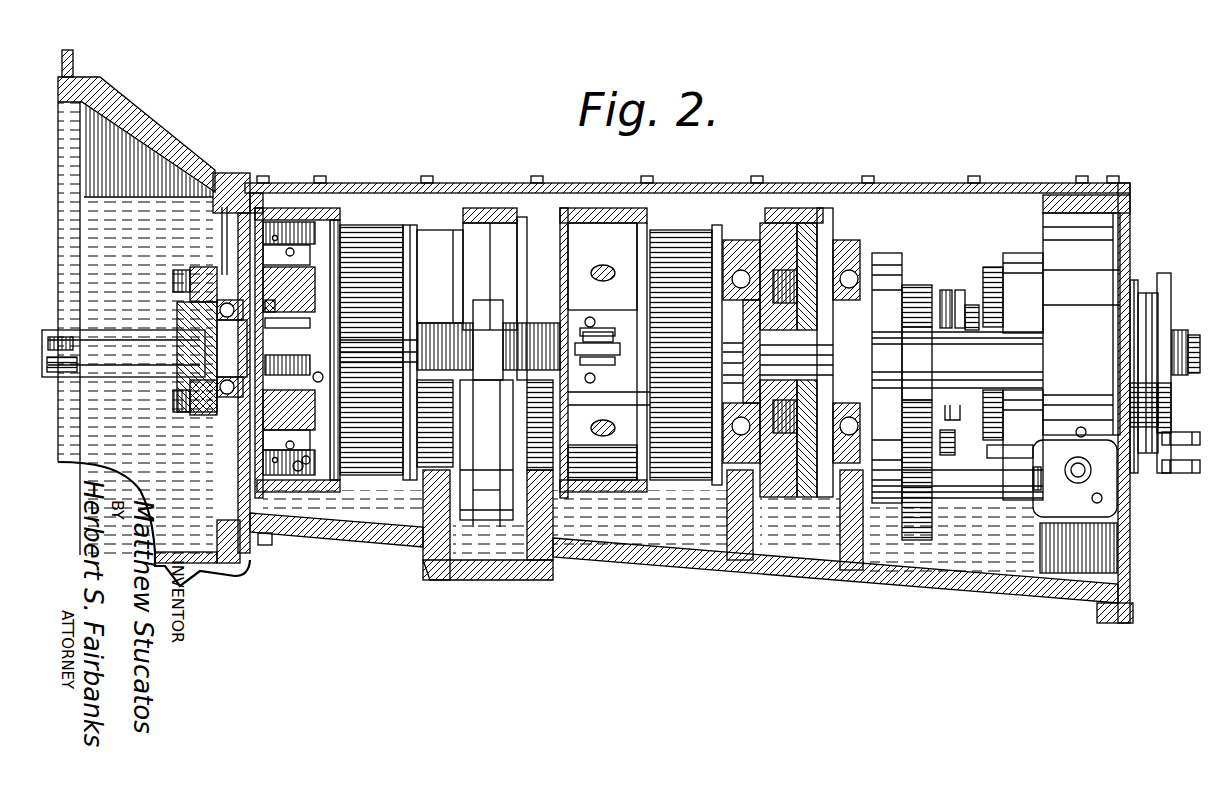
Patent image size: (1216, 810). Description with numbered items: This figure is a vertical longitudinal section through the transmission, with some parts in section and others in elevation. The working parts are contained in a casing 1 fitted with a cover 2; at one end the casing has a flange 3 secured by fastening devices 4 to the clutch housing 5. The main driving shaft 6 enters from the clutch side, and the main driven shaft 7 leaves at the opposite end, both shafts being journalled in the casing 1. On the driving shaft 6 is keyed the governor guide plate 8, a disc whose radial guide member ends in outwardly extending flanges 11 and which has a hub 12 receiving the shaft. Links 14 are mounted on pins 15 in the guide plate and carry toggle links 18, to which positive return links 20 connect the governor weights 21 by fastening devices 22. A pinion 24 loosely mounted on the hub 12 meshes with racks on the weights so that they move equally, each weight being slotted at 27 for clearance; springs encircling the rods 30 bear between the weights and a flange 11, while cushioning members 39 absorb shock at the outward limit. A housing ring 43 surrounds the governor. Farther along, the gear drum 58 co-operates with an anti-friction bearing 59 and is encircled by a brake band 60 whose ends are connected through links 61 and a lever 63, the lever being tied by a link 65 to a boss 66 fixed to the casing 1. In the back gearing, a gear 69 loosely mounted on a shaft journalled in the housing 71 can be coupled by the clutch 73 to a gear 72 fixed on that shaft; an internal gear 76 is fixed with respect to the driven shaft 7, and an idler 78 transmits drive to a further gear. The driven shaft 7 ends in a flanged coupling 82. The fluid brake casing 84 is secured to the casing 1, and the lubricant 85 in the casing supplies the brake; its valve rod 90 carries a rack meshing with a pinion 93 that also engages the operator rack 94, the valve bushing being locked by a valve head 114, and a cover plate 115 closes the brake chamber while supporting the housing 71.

The casing 1 is at (665, 560).
The cover 2 is at (655, 193).
The flange 3 is at (247, 558).
The fastening devices 4 is at (272, 538).
The clutch housing 5 is at (236, 566).
The main driving shaft 6 is at (144, 341).
The main driven shaft 7 is at (1186, 340).
The guide plate 8 is at (332, 438).
The flanges 11 is at (300, 240).
The hub 12 is at (290, 328).
The links 14 is at (625, 352).
The pins 15 is at (294, 360).
The toggle links 18 is at (302, 232).
The positive return links 20 is at (305, 252).
The governor weights 21 is at (300, 284).
The fastening devices 22 is at (305, 262).
The pinion 24 is at (300, 306).
The slot 27 is at (602, 266).
The rods 30 is at (600, 322).
The cushioning members 39 is at (615, 274).
The housing ring 43 is at (300, 215).
The gear drum 58 is at (470, 228).
The anti-friction bearing 59 is at (740, 240).
The brake band 60 is at (510, 208).
The links 61 is at (437, 530).
The lever 63 is at (488, 518).
The link 65 is at (490, 340).
The boss 66 is at (430, 340).
The gear 69 is at (915, 285).
The housing 71 is at (887, 378).
The gear 72 is at (972, 305).
The clutch 73 is at (948, 290).
The internal gear 76 is at (997, 267).
The idler 78 is at (912, 532).
The flanged coupling 82 is at (1165, 318).
The casing 84 is at (1112, 263).
The lubricant 85 is at (1005, 560).
The valve rod 90 is at (1092, 475).
The pinion 93 is at (1025, 495).
The rack 94 is at (985, 451).
The valve head 114 is at (1095, 505).
The cover plate 115 is at (1040, 302).